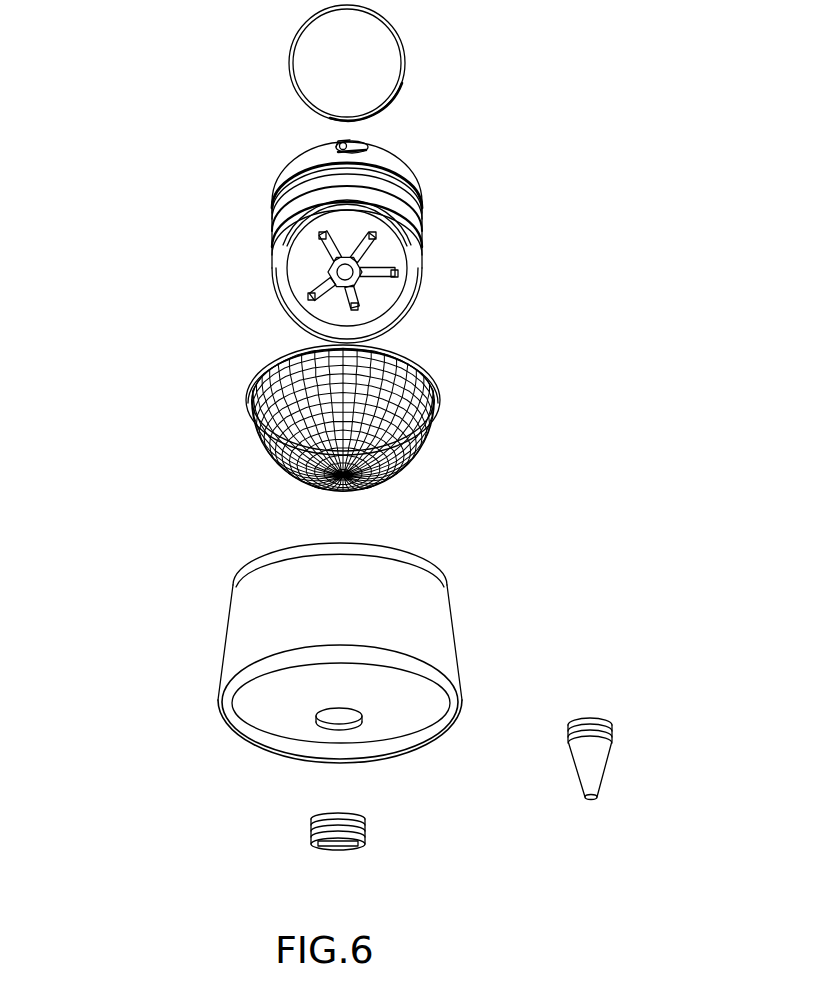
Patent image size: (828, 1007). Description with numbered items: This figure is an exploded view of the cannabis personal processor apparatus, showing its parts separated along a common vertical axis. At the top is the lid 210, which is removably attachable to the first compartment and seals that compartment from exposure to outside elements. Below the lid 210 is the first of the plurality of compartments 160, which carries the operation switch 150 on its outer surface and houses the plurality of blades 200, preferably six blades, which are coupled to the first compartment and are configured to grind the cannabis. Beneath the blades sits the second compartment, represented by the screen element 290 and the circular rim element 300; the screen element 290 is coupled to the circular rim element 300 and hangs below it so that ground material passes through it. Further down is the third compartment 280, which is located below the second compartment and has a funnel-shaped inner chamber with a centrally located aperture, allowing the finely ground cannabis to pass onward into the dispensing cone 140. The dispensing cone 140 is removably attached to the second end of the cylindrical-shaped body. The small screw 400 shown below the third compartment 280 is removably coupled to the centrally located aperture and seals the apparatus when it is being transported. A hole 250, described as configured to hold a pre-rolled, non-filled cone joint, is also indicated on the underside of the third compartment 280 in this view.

The dispensing cone 140 is at (595, 758).
The operation switch 150 is at (365, 145).
The plurality of compartments 160 is at (273, 213).
The plurality of blades 200 is at (400, 240).
The lid 210 is at (298, 95).
The hole 250 is at (330, 722).
The third compartment 280 is at (452, 640).
The screen element 290 is at (275, 472).
The circular rim element 300 is at (423, 400).
The screw 400 is at (365, 845).